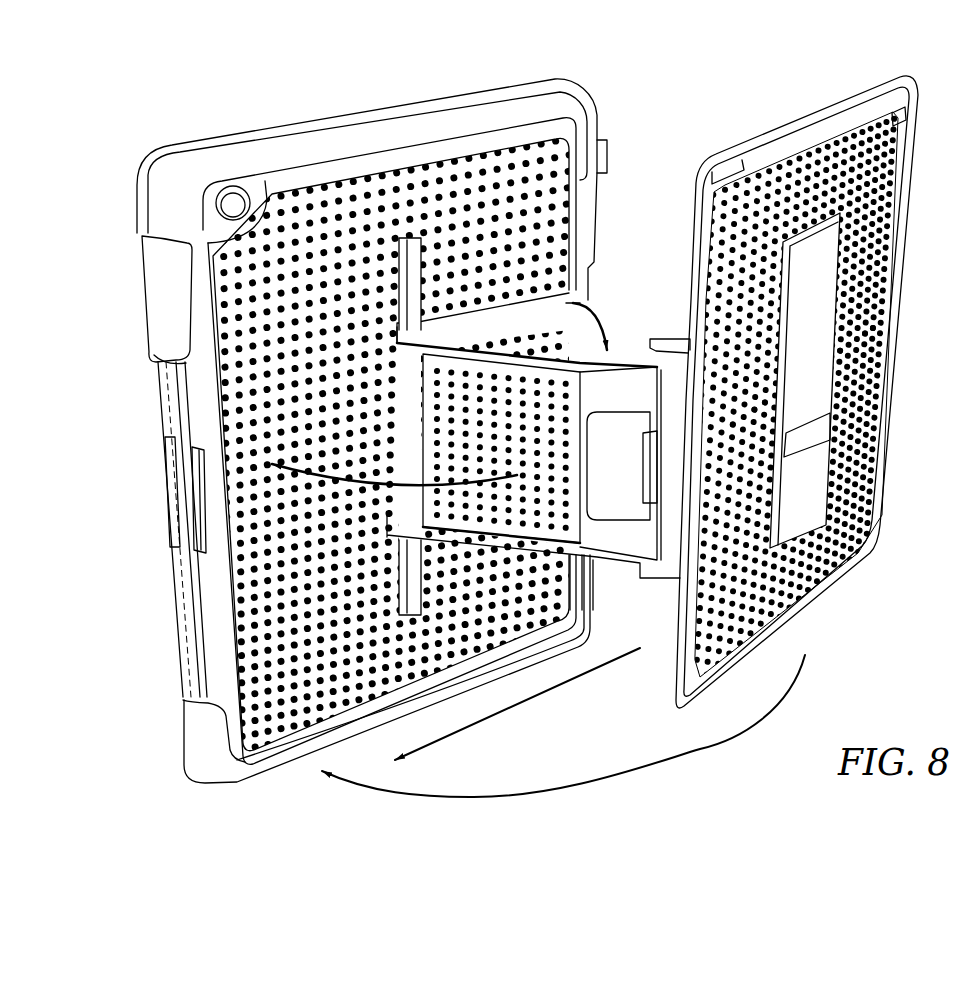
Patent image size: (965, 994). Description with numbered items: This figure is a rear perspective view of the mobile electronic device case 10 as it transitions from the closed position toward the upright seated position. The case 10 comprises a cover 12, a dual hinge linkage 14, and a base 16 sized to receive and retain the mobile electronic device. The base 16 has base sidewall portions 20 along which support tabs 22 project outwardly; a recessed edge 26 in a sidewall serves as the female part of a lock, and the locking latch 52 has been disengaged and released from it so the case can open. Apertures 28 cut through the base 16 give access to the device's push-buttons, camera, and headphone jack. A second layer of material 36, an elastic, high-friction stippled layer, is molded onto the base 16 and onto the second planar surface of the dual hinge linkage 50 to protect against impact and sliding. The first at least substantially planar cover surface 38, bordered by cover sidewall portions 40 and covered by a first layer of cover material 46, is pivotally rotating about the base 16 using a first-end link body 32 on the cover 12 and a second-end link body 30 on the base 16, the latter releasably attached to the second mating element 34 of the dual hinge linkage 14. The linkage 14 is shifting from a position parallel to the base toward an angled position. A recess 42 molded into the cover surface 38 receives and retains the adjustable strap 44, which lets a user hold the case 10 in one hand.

The mobile electronic device case 10 is at (614, 104).
The cover 12 is at (797, 125).
The dual hinge linkage 14 is at (607, 375).
The base 16 is at (290, 145).
The base sidewall portions 20 is at (141, 163).
The support tabs 22 is at (608, 152).
The recessed edge 26 is at (190, 470).
The apertures 28 is at (232, 196).
The second-end link body 30 is at (403, 236).
The first-end link body 32 is at (674, 344).
The second mating element 34 is at (405, 345).
The second layer of material 36 is at (361, 172).
The first at least substantially planar cover surface 38 is at (893, 117).
The cover sidewall portions 40 is at (690, 178).
The recess 42 is at (880, 242).
The adjustable strap 44 is at (817, 330).
The first layer of cover material 46 is at (714, 156).
The second planar surface of the dual hinge linkage 50 is at (594, 548).
The locking latch 52 is at (170, 528).